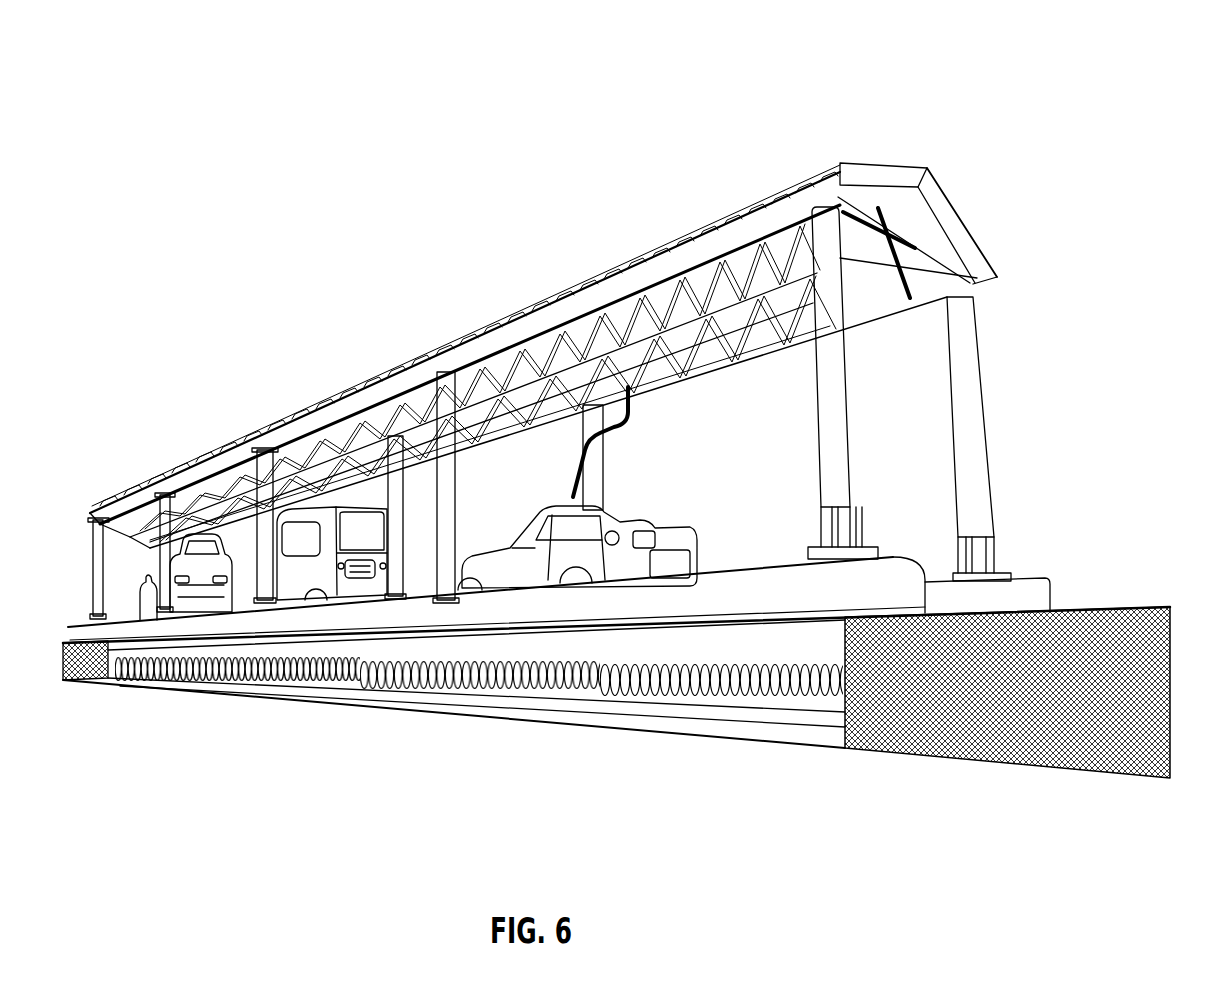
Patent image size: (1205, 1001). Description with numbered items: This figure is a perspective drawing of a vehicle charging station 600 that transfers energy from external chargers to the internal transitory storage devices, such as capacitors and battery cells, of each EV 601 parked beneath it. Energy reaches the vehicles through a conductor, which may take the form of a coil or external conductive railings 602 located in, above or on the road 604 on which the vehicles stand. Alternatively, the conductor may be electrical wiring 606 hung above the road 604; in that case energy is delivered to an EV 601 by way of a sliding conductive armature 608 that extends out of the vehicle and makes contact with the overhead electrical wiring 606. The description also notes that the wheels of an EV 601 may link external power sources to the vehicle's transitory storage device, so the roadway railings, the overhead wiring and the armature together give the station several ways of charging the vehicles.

The vehicle charging station 600 is at (396, 260).
The EV 601 is at (540, 513).
The external conductive railings 602 is at (568, 668).
The road 604 is at (878, 546).
The electrical wiring 606 is at (620, 290).
The sliding conductive armature 608 is at (614, 443).